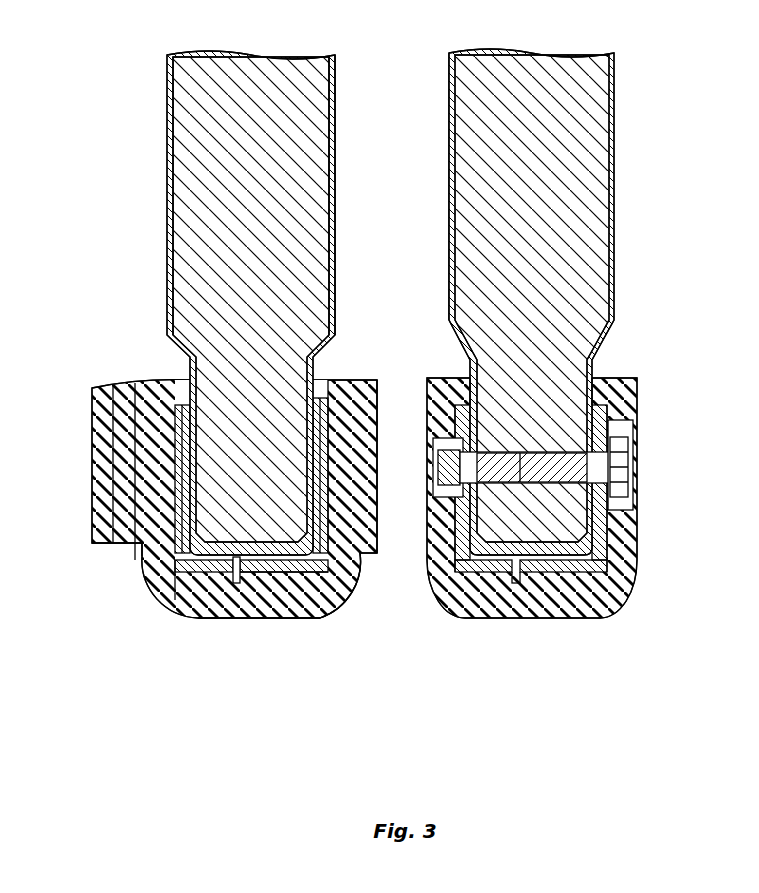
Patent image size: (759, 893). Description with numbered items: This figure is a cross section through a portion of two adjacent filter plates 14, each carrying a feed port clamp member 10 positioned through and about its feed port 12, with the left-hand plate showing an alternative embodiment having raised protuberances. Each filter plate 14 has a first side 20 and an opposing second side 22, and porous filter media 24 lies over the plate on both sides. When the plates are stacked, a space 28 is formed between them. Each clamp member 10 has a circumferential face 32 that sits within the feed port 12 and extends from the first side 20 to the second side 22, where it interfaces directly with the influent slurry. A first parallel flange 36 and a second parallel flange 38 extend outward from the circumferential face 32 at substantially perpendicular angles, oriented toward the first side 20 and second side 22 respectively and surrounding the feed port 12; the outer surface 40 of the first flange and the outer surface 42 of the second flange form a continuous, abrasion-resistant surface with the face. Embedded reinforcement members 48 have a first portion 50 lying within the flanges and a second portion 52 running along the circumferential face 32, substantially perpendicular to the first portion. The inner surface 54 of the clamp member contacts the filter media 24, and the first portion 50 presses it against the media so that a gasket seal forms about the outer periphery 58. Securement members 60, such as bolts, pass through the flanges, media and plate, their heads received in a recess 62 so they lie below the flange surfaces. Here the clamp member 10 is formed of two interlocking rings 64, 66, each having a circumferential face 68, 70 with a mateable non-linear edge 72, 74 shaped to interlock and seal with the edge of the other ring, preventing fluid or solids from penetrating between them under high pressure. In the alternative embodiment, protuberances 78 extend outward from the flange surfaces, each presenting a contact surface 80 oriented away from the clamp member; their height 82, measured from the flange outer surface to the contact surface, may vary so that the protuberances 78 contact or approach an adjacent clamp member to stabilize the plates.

The feed port clamp member 10 is at (280, 655).
The feed port 12 is at (180, 580).
The filter plate 14 is at (276, 303).
The first side 20 is at (333, 340).
The second side 22 is at (167, 178).
The filter media 24 is at (335, 200).
The space 28 is at (395, 313).
The circumferential face 32 is at (278, 622).
The first parallel flange 36 is at (375, 385).
The second parallel flange 38 is at (140, 380).
The outer surface of the first parallel flange 40 is at (360, 562).
The outer surface of the second parallel flange 42 is at (150, 580).
The reinforcement members 48 is at (478, 605).
The first portion 50 is at (318, 388).
The second portion 52 is at (200, 605).
The inner surface 54 is at (193, 453).
The outer periphery 58 is at (143, 380).
The securement members 60 is at (620, 490).
The recess 62 is at (628, 430).
The interlocking ring 64 is at (365, 618).
The interlocking ring 66 is at (175, 600).
The circumferential face 68 is at (330, 620).
The circumferential face 70 is at (220, 622).
The mateable non-linear edge 72 is at (295, 640).
The mateable non-linear edge 74 is at (245, 605).
The protuberances 78 is at (135, 545).
The contact surface 80 is at (90, 503).
The height 82 is at (140, 560).